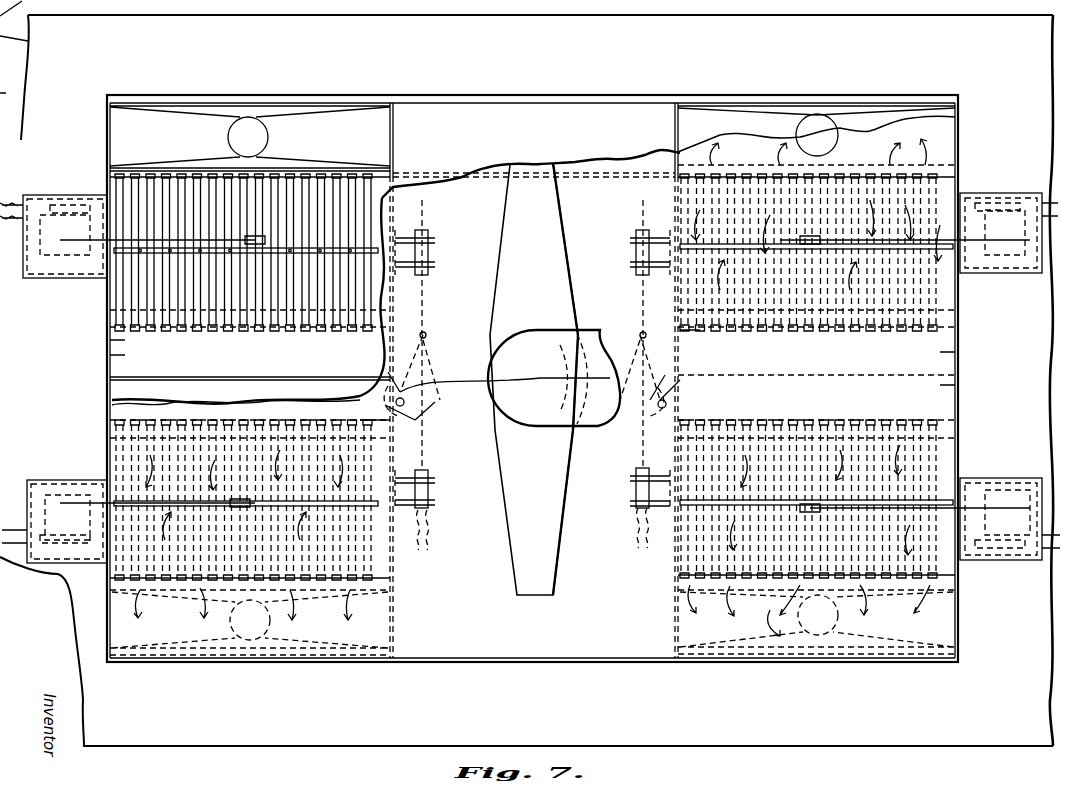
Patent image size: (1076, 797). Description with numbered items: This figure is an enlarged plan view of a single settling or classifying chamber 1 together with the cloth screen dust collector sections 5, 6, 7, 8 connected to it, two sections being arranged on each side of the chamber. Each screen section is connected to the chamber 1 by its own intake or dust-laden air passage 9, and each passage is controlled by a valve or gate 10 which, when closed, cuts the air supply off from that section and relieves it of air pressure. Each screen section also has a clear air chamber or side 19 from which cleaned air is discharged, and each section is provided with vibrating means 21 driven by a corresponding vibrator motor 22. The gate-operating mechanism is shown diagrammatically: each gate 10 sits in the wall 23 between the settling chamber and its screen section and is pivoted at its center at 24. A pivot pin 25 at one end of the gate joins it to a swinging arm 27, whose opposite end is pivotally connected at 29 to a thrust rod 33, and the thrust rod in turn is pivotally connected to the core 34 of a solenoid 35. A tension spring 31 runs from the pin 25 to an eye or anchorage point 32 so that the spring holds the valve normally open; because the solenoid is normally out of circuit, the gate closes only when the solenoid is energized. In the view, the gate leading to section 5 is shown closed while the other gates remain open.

The settling or classifying chamber 1 is at (519, 379).
The cloth screen dust collector section 5 is at (410, 183).
The cloth screen dust collector section 6 is at (120, 448).
The cloth screen dust collector section 7 is at (930, 200).
The cloth screen dust collector section 8 is at (905, 475).
The intake or dust laden air passage 9 is at (125, 390).
The valve 10 is at (385, 340).
The clear air chamber 19 is at (130, 133).
The vibrating means 21 is at (262, 260).
The vibrator motor 22 is at (70, 262).
The wall 23 is at (424, 310).
The center pivot 24 is at (390, 372).
The pivot pin 25 is at (420, 333).
The swinging arm 27 is at (548, 375).
The pivot 29 is at (515, 328).
The tension spring 31 is at (515, 355).
The eye or point of anchorage 32 is at (400, 395).
The thrust rod 33 is at (425, 318).
The core 34 is at (428, 270).
The solenoid 35 is at (432, 245).